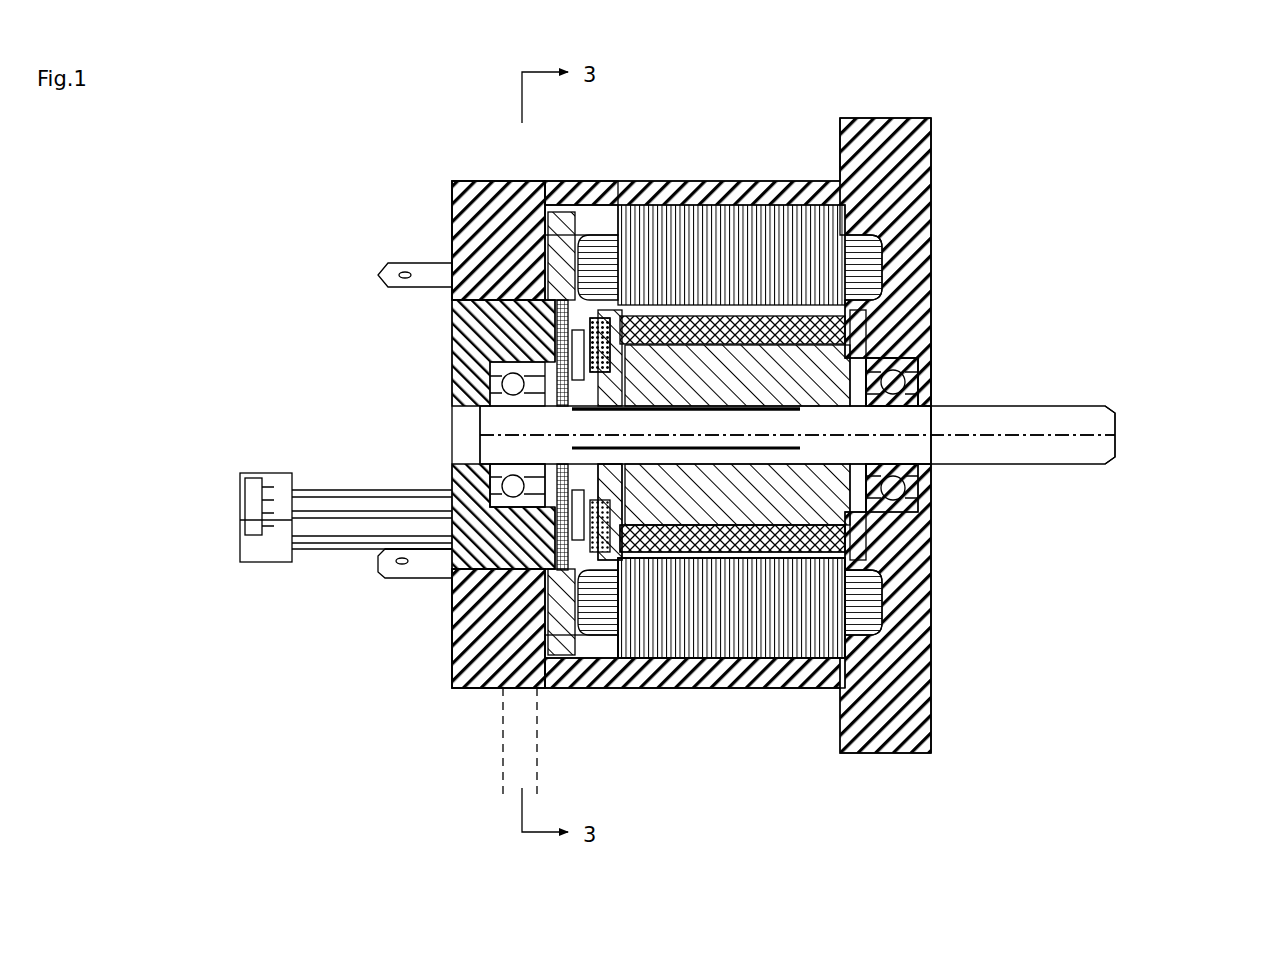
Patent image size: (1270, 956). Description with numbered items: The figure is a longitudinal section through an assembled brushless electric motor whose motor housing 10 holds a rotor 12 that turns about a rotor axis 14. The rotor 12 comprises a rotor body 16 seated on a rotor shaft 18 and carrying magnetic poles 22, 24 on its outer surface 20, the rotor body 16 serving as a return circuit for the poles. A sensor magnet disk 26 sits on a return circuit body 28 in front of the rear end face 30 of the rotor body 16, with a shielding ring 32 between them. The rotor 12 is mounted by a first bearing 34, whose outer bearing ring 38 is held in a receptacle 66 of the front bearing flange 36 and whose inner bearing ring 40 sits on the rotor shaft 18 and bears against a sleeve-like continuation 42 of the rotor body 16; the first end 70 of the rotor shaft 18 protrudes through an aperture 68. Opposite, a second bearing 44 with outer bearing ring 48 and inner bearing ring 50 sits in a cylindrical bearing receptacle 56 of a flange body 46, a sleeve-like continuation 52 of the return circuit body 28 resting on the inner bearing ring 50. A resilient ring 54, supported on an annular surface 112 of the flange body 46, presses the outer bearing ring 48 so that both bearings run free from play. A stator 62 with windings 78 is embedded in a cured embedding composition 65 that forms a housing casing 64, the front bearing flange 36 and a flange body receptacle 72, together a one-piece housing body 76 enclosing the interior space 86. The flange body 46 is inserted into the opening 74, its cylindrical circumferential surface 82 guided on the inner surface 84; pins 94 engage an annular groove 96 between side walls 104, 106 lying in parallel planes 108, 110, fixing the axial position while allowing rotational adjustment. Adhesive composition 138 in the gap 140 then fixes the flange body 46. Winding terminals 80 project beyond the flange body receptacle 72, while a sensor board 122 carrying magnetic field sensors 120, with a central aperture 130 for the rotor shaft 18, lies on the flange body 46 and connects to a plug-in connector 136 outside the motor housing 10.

The motor housing 10 is at (731, 165).
The rotor 12 is at (932, 262).
The rotor axis 14 is at (1120, 430).
The rotor body 16 is at (870, 500).
The rotor shaft 18 is at (1068, 452).
The outer surface 20 is at (870, 545).
The magnetic pole 22 is at (785, 600).
The magnetic pole 24 is at (690, 560).
The sensor magnet disk 26 is at (470, 688).
The return circuit body 28 is at (648, 600).
The rear end face 30 is at (480, 435).
The shielding ring 32 is at (630, 560).
The first bearing 34 is at (932, 360).
The front bearing flange 36 is at (932, 292).
The outer bearing ring 38 is at (935, 330).
The inner bearing ring 40 is at (935, 495).
The continuation 42 is at (918, 405).
The second bearing 44 is at (430, 549).
The flange body 46 is at (470, 326).
The outer bearing ring 48 is at (480, 372).
The inner bearing ring 50 is at (500, 392).
The sleeve-like continuation 52 is at (520, 300).
The resilient ring 54 is at (480, 382).
The bearing receptacle 56 is at (475, 498).
The stator 62 is at (755, 610).
The housing casing 64 is at (720, 690).
The embedding composition 65 is at (505, 690).
The receptacle 66 is at (932, 500).
The aperture 68 is at (932, 388).
The first end 70 is at (1095, 400).
The flange body receptacle 72 is at (452, 688).
The opening 74 is at (452, 302).
The housing body 76 is at (776, 170).
The windings 78 is at (860, 610).
The winding terminals 80 is at (450, 268).
The circumferential surface 82 is at (452, 700).
The inner surface 84 is at (452, 640).
The interior space 86 is at (932, 250).
The pins 94 is at (560, 330).
The annular groove 96 is at (455, 308).
The side wall 104 is at (540, 300).
The side wall 106 is at (500, 300).
The plane 108 is at (537, 772).
The plane 110 is at (503, 772).
The annular surface 112 is at (475, 492).
The magnetic field sensors 120 is at (606, 330).
The sensor board 122 is at (562, 300).
The central aperture 130 is at (660, 410).
The plug-in connector 136 is at (260, 560).
The adhesive composition 138 is at (452, 270).
The gap 140 is at (452, 610).